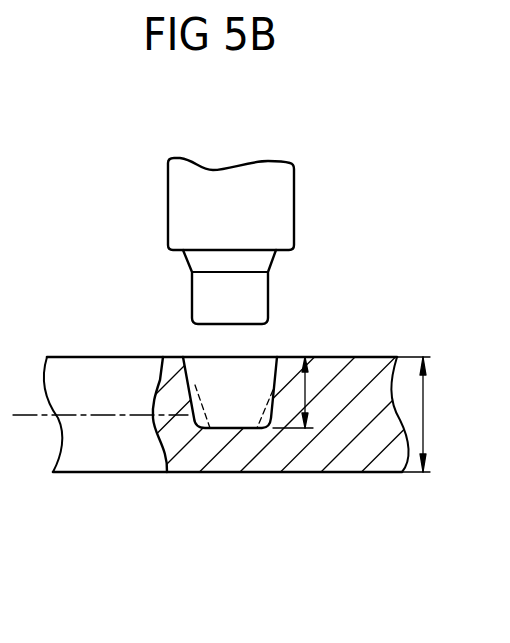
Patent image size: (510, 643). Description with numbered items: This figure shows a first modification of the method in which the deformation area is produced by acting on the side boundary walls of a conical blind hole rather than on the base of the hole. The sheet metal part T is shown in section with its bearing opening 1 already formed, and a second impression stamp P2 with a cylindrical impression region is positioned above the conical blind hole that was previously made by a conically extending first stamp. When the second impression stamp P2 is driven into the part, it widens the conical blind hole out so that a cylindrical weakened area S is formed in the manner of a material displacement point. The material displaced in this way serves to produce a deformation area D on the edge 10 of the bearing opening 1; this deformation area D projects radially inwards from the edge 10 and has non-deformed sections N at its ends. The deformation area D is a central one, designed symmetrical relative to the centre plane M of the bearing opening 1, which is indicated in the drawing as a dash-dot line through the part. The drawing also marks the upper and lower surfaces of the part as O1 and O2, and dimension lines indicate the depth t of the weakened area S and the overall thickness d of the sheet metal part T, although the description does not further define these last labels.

The second impression stamp P2 is at (272, 207).
The bearing opening 1 is at (72, 447).
The edge of the bearing opening 10 is at (155, 388).
The non-deformed sections N is at (162, 358).
The deformation area D is at (160, 395).
The cylindrical weakened area S is at (255, 372).
The recess depth t is at (317, 372).
The plate thickness d is at (435, 414).
The upper surface O1 is at (372, 356).
The lower surface O2 is at (350, 473).
The sheet metal part T is at (380, 452).
The centre plane M is at (32, 416).